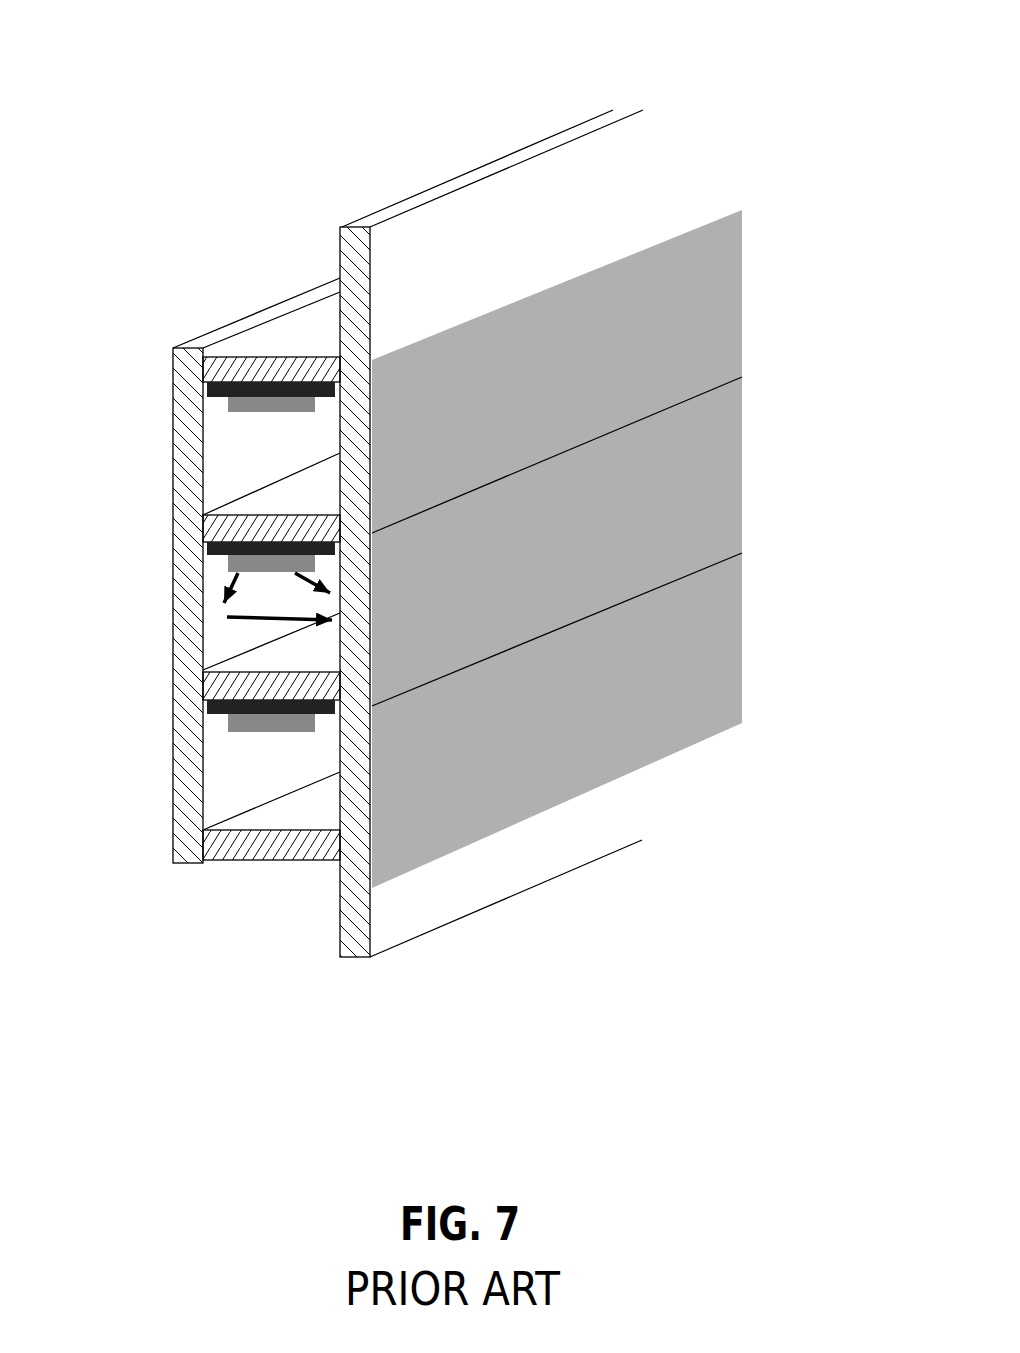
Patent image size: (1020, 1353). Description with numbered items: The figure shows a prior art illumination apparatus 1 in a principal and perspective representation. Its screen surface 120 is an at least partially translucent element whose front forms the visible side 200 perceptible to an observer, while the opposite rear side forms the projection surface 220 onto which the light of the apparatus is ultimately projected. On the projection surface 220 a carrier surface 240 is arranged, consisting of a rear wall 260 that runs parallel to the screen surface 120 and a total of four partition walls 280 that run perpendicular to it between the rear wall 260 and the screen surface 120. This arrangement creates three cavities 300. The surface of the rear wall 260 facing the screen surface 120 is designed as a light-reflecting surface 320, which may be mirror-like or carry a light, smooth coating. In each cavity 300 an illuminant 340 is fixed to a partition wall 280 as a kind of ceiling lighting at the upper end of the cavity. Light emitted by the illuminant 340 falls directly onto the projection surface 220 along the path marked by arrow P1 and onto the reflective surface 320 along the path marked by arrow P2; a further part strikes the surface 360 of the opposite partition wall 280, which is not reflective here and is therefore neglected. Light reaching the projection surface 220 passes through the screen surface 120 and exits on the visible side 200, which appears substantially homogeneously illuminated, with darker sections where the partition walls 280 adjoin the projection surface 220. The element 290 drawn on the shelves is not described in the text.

The illumination apparatus 1 is at (188, 162).
The screen surface 120 is at (560, 133).
The visible side 200 is at (708, 298).
The projection surface 220 is at (340, 248).
The carrier surface 240 is at (158, 318).
The rear wall 260 is at (172, 615).
The partition wall 280 is at (263, 367).
The circuit board 290 is at (262, 381).
The cavity 300 is at (271, 471).
The reflective surface 320 is at (213, 436).
The illuminant 340 is at (222, 405).
The surface of the further partition wall 360 is at (260, 500).
The light path P1 is at (296, 572).
The light path P2 is at (275, 622).